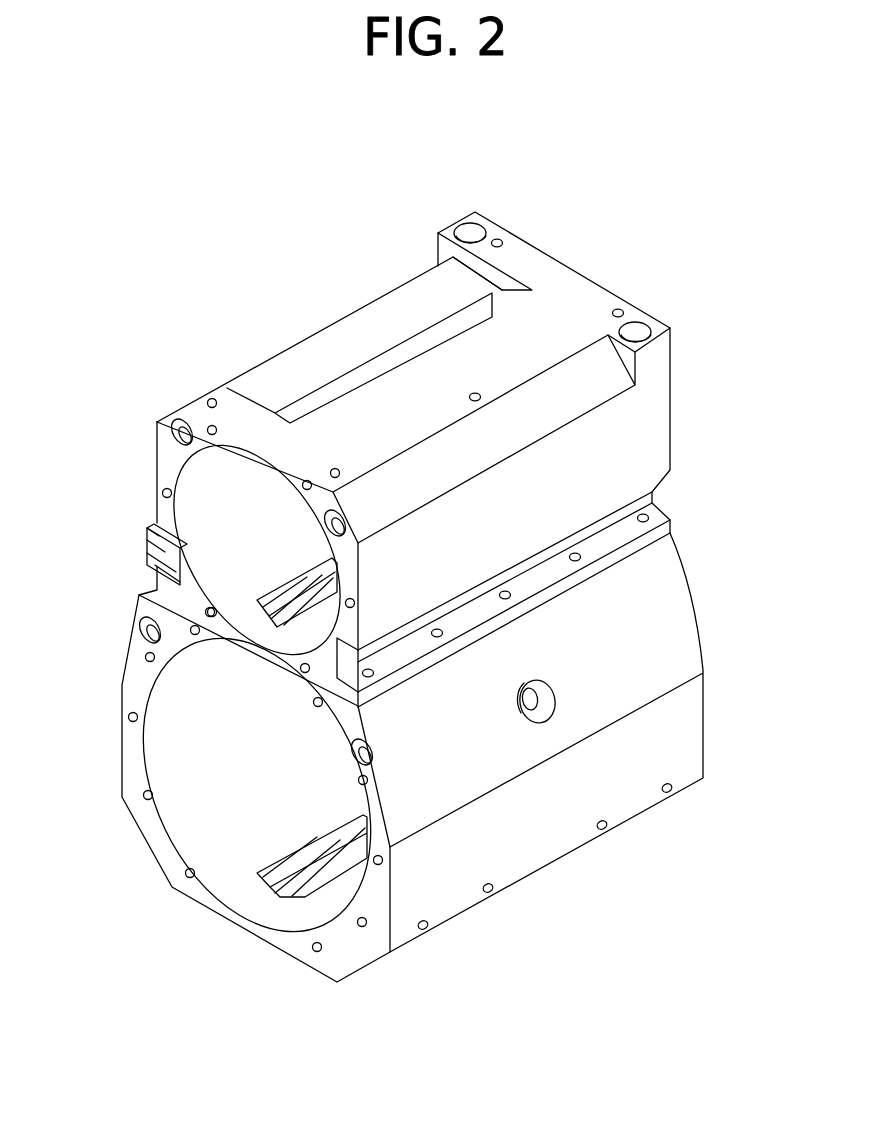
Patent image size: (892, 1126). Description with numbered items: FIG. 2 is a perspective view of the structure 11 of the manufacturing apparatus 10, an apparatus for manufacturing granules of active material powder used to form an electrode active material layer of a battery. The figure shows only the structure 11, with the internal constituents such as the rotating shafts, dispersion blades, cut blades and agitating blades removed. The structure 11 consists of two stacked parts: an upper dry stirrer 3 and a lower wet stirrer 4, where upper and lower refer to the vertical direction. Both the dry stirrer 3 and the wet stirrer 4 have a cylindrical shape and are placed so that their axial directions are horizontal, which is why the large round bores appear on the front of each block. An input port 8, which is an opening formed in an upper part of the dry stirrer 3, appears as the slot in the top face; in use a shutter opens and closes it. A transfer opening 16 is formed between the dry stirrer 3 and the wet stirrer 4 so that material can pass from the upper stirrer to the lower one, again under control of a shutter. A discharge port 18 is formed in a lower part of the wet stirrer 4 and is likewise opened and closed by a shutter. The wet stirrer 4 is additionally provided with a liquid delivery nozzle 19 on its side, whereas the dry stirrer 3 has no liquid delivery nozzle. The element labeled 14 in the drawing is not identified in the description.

The manufacturing apparatus 10 is at (434, 583).
The structure 11 is at (434, 583).
The dry stirrer 3 is at (425, 459).
The wet stirrer 4 is at (434, 757).
The input port 8 is at (378, 365).
The lower bore 14 is at (228, 808).
The transfer opening 16 is at (307, 607).
The discharge port 18 is at (295, 890).
The liquid delivery nozzle 19 is at (552, 700).